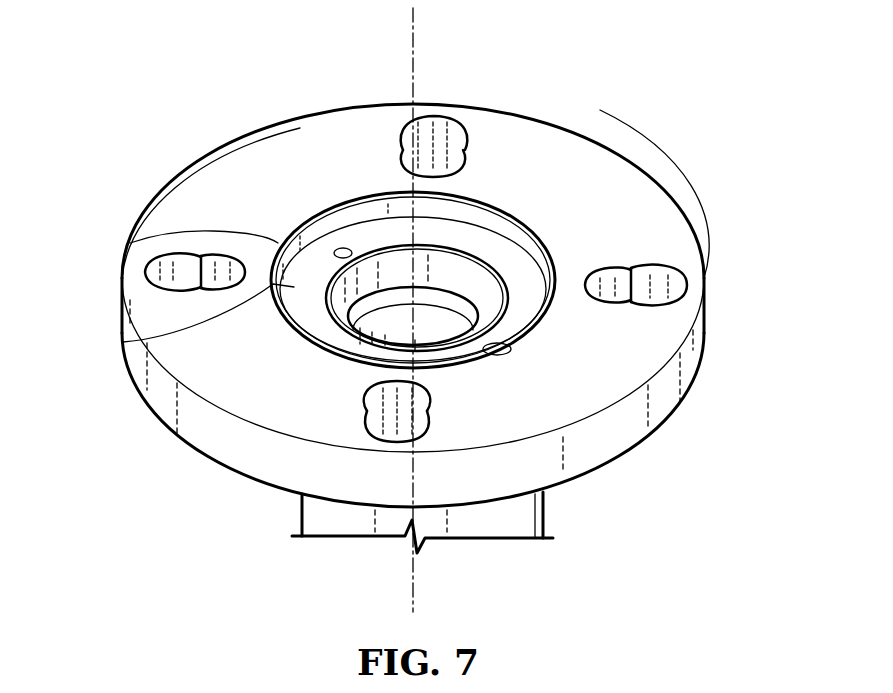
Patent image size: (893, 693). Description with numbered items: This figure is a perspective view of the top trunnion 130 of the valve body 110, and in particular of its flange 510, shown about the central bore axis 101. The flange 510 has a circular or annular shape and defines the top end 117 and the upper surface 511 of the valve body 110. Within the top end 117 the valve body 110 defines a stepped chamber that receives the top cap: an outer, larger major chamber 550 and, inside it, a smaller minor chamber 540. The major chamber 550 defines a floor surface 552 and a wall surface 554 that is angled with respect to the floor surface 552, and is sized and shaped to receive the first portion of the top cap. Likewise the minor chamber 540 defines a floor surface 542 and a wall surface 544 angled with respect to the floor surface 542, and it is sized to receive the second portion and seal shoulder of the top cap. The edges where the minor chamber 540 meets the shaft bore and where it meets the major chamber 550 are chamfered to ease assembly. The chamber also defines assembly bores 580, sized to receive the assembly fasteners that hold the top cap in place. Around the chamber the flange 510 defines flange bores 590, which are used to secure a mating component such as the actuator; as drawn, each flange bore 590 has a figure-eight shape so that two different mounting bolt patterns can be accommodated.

The central axis 101 is at (410, 70).
The valve body 110 is at (313, 517).
The top end 117 is at (187, 197).
The top trunnion 130 is at (513, 519).
The flange 510 is at (625, 187).
The upper surface 511 is at (647, 223).
The minor chamber 540 is at (472, 272).
The floor surface 542 is at (345, 322).
The wall surface 544 is at (338, 293).
The major chamber 550 is at (468, 205).
The floor surface 552 is at (123, 342).
The wall surface 554 is at (130, 243).
The assembly bores 580 is at (340, 250).
The flange bores 590 is at (667, 287).